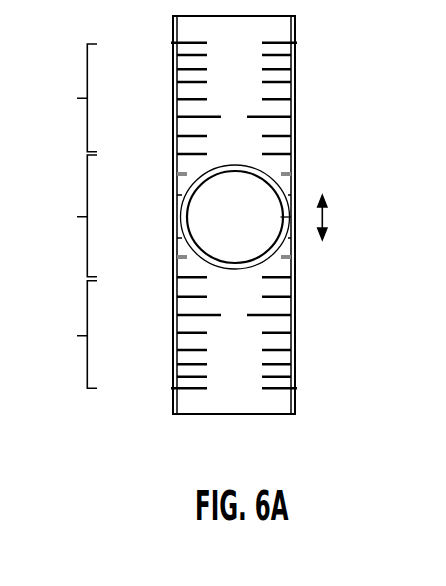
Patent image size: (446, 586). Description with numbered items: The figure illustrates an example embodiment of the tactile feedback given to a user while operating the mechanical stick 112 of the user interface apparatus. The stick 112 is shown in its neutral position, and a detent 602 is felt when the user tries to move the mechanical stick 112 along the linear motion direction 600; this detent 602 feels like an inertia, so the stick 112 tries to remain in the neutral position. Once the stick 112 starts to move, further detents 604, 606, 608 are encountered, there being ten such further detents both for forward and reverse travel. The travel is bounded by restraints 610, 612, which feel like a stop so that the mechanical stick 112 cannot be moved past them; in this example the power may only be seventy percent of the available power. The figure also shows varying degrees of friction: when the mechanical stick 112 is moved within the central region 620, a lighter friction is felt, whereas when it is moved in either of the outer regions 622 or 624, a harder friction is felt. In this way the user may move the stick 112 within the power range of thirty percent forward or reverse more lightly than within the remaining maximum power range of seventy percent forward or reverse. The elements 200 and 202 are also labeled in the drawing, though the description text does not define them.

The mechanical stick 112 is at (284, 183).
The center element 200 is at (252, 230).
The upper ladder section 202 is at (251, 81).
The linear motion direction 600 is at (322, 217).
The detent 602 is at (181, 217).
The further detent 604 is at (176, 194).
The further detent 606 is at (173, 118).
The further detent 608 is at (173, 237).
The restraint 610 is at (173, 83).
The restraint 612 is at (173, 350).
The region 620 is at (70, 216).
The region 622 is at (70, 98).
The region 624 is at (70, 335).